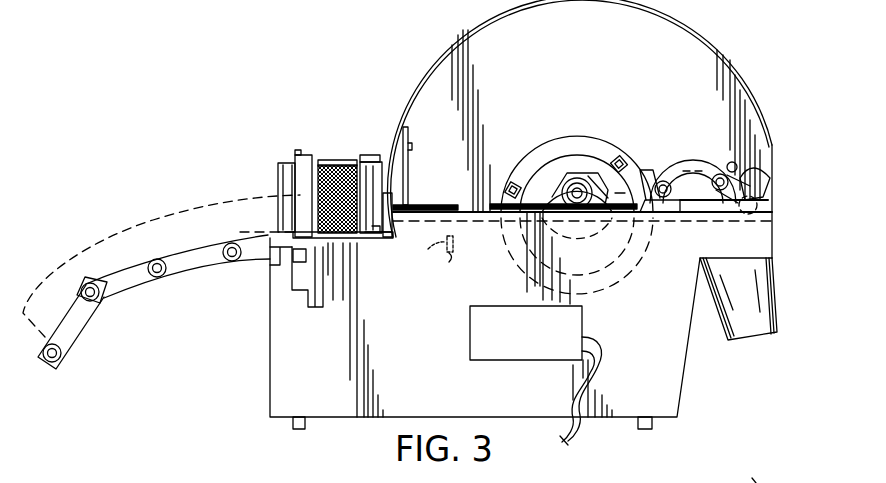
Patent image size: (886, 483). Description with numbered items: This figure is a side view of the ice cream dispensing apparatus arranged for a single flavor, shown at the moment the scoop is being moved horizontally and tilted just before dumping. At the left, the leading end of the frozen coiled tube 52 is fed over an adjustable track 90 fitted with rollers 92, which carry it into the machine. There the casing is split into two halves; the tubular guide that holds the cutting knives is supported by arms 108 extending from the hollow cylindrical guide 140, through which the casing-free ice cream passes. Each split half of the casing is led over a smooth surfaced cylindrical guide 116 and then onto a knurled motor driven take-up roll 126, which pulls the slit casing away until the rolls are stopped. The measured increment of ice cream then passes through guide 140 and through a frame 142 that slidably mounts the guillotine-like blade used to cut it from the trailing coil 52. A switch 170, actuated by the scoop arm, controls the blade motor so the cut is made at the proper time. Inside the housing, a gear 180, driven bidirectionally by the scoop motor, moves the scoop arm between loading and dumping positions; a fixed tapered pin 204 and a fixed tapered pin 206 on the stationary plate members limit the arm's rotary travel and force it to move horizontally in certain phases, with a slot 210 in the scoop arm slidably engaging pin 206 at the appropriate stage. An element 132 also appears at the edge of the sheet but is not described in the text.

The frozen coiled tube 52 is at (47, 273).
The adjustable track 90 is at (163, 285).
The rollers 92 is at (218, 265).
The arms 108 is at (373, 240).
The smooth surfaced cylindrical guide 116 is at (366, 158).
The knurled motor driven take-up roll 126 is at (322, 160).
The element 132 is at (740, 477).
The hollow cylindrical guide 140 is at (391, 150).
The frame 142 is at (409, 160).
The switch 170 is at (443, 251).
The gear 180 is at (568, 158).
The fixed tapered pin 204 is at (500, 192).
The fixed tapered pin 206 is at (618, 158).
The slot 210 is at (663, 180).